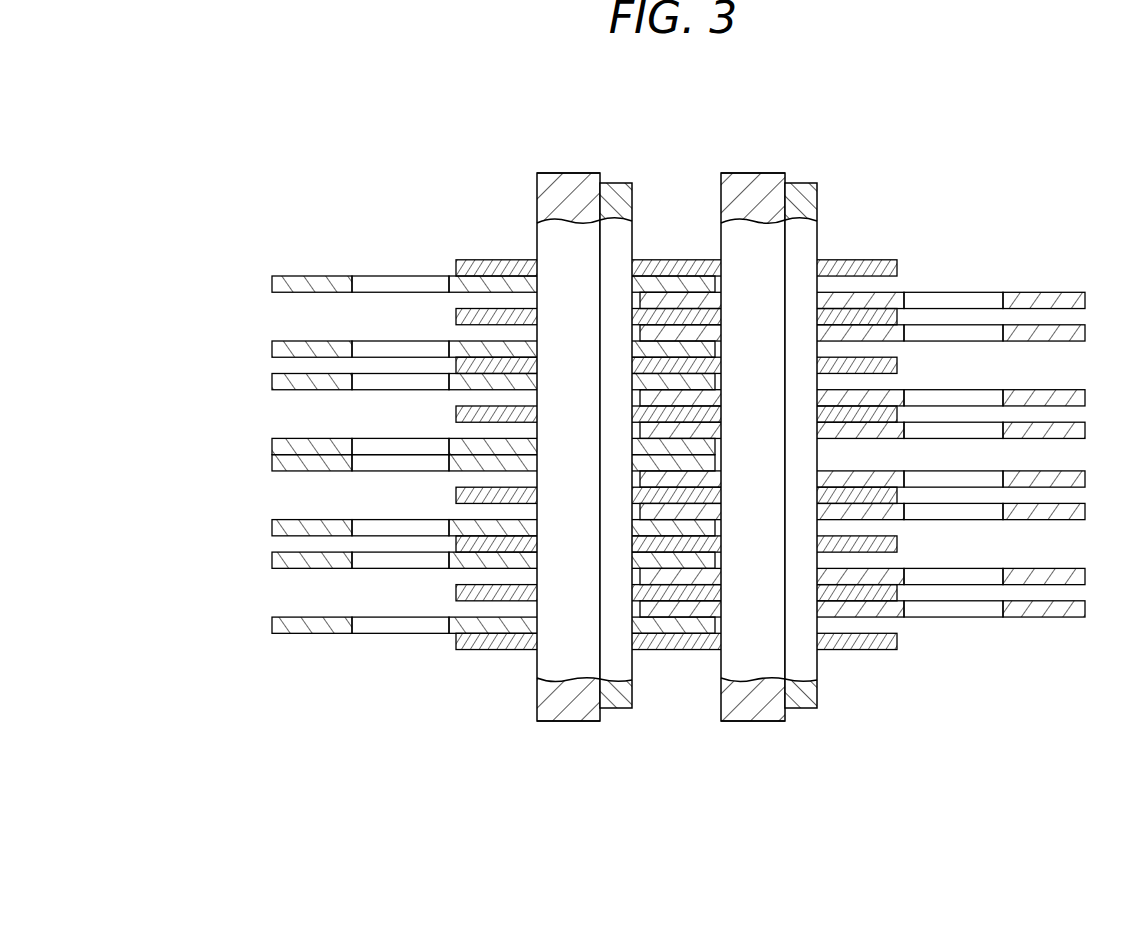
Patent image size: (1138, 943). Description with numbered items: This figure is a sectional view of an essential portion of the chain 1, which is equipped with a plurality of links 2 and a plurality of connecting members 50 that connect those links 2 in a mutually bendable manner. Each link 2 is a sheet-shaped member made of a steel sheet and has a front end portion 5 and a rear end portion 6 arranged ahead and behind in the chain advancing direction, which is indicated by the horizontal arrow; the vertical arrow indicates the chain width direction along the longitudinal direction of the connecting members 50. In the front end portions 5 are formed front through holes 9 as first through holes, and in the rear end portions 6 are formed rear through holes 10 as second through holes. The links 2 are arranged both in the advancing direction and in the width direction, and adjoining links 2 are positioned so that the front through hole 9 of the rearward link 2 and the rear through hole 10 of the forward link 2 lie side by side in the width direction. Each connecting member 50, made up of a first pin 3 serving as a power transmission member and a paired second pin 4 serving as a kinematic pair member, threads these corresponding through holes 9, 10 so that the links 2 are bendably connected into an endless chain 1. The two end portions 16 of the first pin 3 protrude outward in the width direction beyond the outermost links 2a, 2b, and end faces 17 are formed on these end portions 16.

The chain 1 is at (975, 172).
The link 2 is at (644, 471).
The link arranged at one end portion in the chain width direction 2a is at (678, 508).
The link arranged at the other end portion in the chain width direction 2b is at (882, 262).
The first pin 3 is at (578, 722).
The second pin 4 is at (612, 708).
The front end portion 5 is at (1028, 590).
The rear end portion 6 is at (318, 537).
The front through hole 9 is at (537, 527).
The rear through hole 10 is at (353, 520).
The end portion 16 is at (537, 198).
The end face 17 is at (567, 172).
The connecting member 50 is at (644, 464).